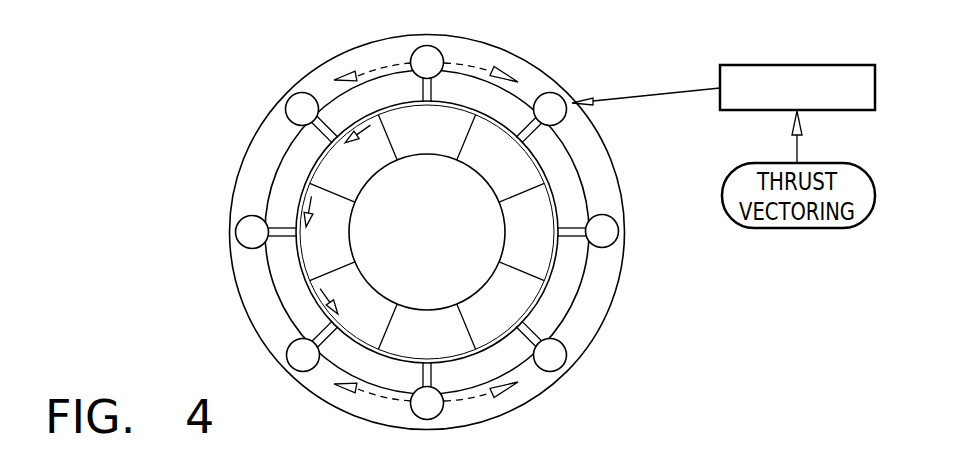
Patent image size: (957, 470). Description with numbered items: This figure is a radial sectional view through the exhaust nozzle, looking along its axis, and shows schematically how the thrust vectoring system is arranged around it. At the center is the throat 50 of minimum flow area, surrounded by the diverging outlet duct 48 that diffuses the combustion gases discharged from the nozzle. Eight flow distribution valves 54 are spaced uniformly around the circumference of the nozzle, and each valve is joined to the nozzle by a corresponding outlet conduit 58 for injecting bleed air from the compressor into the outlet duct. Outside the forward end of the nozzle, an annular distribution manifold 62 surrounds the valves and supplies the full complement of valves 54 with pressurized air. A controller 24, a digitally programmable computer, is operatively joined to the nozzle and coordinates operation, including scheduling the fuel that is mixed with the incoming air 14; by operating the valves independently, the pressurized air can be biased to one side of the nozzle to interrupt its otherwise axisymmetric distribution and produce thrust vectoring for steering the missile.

The incoming air 14 is at (384, 217).
The controller 24 is at (787, 63).
The diverging outlet duct 48 is at (437, 328).
The throat 50 is at (478, 285).
The flow distribution valve 54 is at (243, 220).
The outlet conduit 58 is at (283, 239).
The annular distribution manifold 62 is at (248, 147).